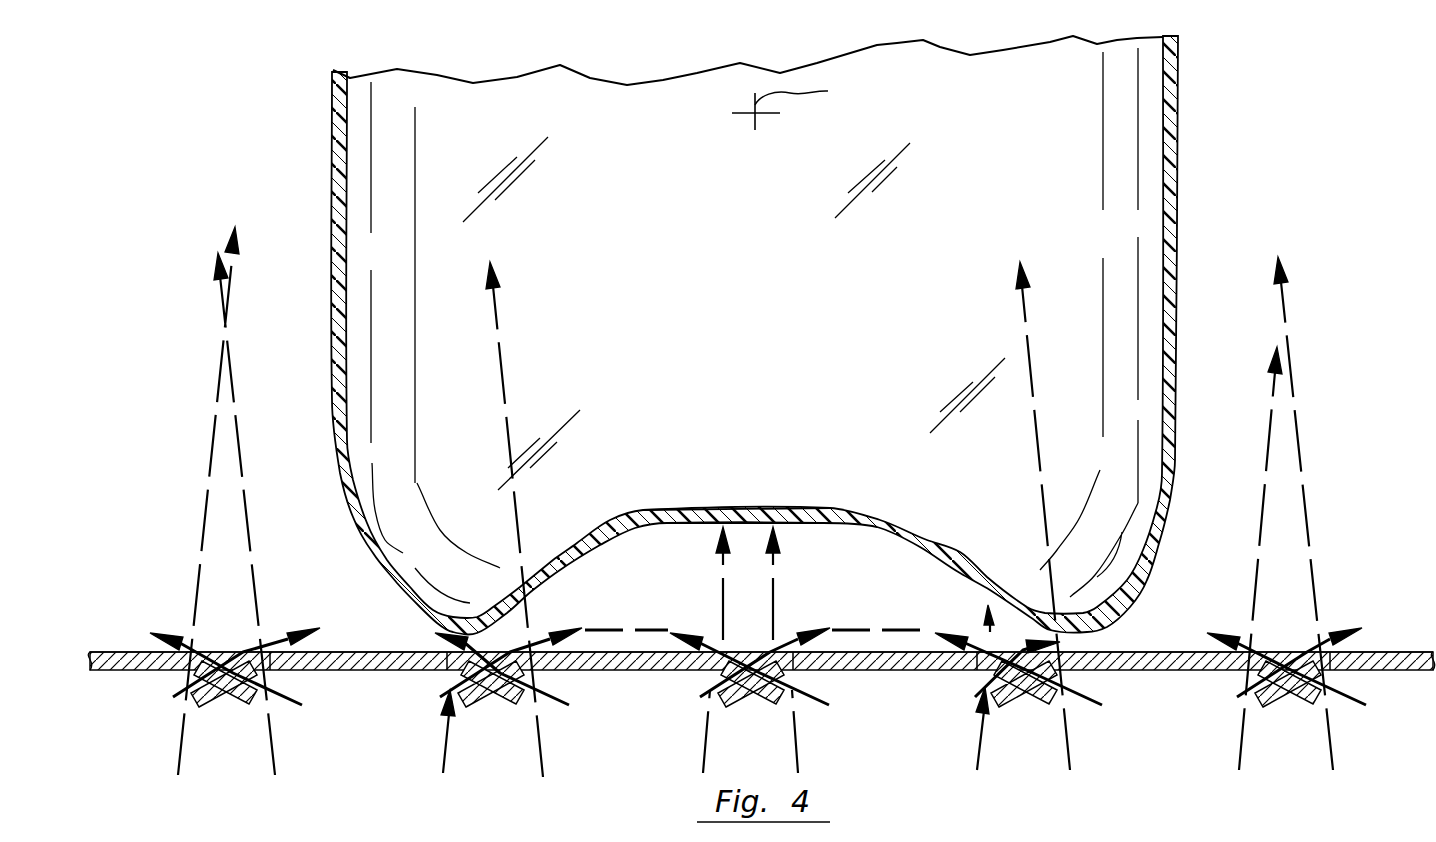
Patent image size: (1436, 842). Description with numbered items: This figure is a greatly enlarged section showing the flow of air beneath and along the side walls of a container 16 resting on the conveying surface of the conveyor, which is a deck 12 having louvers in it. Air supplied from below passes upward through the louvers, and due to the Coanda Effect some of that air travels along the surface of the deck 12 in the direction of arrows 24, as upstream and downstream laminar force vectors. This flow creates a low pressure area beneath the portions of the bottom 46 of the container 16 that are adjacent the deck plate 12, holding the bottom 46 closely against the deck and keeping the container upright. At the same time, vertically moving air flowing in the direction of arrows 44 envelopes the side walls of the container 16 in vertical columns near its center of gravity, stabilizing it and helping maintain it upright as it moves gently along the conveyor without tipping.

The deck 12 is at (1428, 650).
The container 16 is at (1180, 170).
The arrows 24 is at (1347, 683).
The arrows 44 is at (980, 715).
The bottom 46 is at (742, 507).